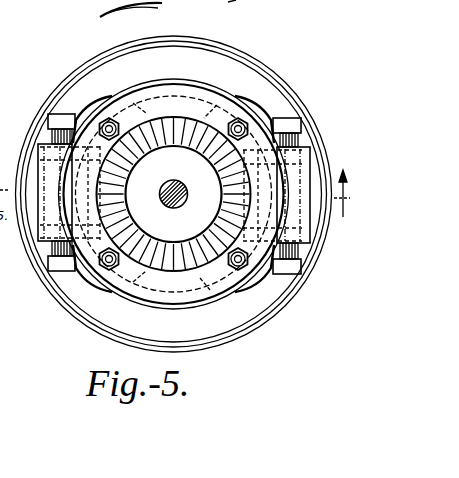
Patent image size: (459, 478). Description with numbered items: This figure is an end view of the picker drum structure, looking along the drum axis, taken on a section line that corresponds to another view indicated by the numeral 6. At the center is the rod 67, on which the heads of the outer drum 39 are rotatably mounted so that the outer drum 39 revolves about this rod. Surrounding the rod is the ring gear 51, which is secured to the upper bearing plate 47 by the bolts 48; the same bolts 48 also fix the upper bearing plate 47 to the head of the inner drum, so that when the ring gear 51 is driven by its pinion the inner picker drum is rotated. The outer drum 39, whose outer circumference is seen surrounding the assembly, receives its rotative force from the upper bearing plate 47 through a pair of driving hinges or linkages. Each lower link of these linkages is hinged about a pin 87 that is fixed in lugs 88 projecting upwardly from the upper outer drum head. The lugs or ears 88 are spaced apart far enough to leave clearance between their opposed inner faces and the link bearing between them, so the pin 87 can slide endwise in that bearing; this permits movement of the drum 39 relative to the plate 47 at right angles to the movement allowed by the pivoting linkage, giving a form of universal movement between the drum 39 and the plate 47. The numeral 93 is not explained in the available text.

The outer drum 39 is at (281, 321).
The upper bearing plate 47 is at (153, 305).
The bolts 48 is at (228, 121).
The ring gear 51 is at (144, 265).
The rod 67 is at (176, 207).
The pin 87 is at (35, 131).
The lugs 88 is at (66, 112).
The clamp neck 93 is at (33, 141).
The section line 6 is at (341, 208).